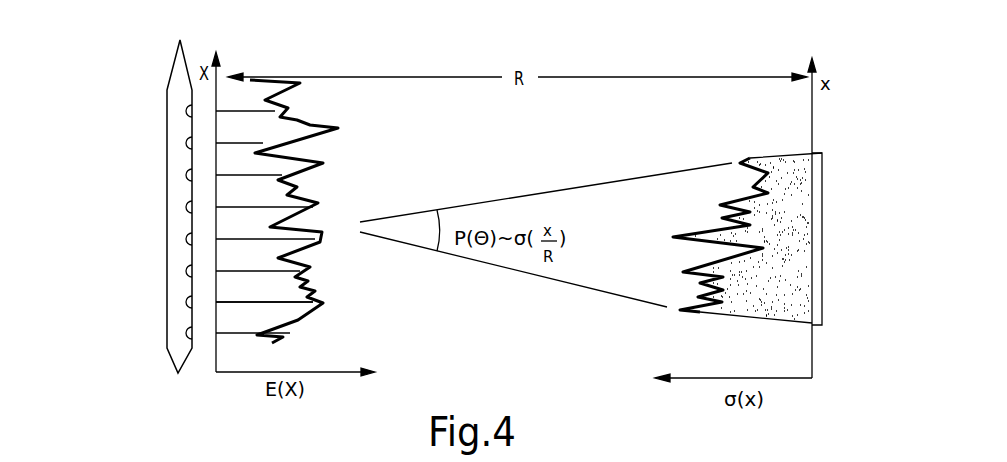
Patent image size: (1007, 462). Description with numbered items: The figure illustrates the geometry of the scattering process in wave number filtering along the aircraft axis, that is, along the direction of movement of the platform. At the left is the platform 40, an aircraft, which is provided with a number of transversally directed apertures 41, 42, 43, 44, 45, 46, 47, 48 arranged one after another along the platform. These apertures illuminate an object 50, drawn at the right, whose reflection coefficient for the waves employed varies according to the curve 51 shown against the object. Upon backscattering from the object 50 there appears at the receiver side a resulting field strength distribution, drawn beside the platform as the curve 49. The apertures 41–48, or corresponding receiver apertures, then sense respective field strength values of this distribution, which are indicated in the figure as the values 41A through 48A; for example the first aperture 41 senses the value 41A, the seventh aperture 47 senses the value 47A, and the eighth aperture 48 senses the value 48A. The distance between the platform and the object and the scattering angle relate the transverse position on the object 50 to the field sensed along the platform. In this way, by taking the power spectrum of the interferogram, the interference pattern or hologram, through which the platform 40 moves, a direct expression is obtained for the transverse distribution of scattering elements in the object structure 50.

The platform 40 is at (170, 68).
The transversally directed aperture 41 is at (186, 111).
The transversally directed aperture 42 is at (186, 143).
The transversally directed aperture 43 is at (186, 175).
The transversally directed aperture 44 is at (186, 207).
The transversally directed aperture 45 is at (186, 239).
The transversally directed aperture 46 is at (186, 271).
The transversally directed aperture 47 is at (186, 302).
The transversally directed aperture 48 is at (186, 333).
The field strength value 41A is at (250, 111).
The field strength value 47A is at (280, 305).
The field strength value 48A is at (230, 333).
The field strength distribution curve 49 is at (327, 127).
The object 50 is at (823, 230).
The reflection coefficient curve 51 is at (757, 158).